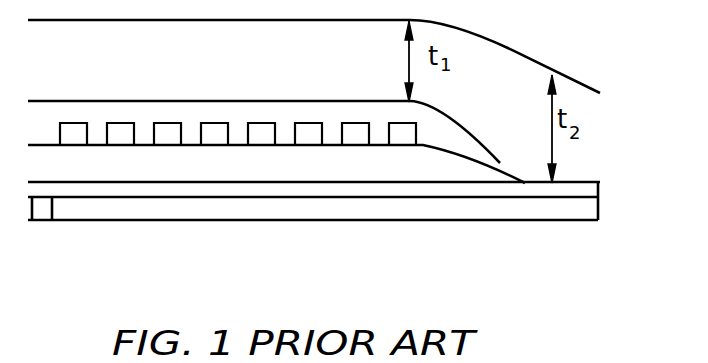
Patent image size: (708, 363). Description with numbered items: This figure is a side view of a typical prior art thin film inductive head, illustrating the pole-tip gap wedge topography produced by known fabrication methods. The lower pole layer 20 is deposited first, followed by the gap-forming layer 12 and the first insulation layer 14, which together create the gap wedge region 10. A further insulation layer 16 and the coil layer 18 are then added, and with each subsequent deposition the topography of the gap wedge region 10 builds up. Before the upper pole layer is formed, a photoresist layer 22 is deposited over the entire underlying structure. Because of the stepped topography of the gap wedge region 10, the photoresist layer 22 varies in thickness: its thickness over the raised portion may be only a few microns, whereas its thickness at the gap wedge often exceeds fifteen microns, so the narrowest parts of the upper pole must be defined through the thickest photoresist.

The gap wedge region 10 is at (596, 146).
The gap-forming layer 12 is at (600, 186).
The insulation I1 layer 14 is at (462, 165).
The insulation layer 16 is at (437, 133).
The coil layer 18 is at (168, 136).
The lower pole P1 layer 20 is at (567, 203).
The photoresist layer 22 is at (347, 82).